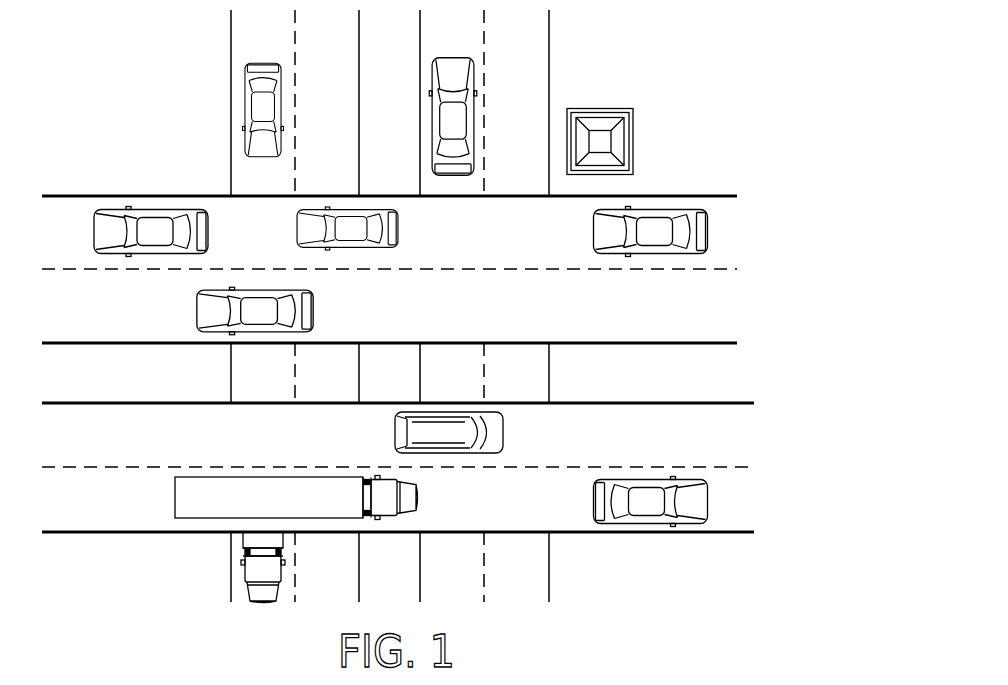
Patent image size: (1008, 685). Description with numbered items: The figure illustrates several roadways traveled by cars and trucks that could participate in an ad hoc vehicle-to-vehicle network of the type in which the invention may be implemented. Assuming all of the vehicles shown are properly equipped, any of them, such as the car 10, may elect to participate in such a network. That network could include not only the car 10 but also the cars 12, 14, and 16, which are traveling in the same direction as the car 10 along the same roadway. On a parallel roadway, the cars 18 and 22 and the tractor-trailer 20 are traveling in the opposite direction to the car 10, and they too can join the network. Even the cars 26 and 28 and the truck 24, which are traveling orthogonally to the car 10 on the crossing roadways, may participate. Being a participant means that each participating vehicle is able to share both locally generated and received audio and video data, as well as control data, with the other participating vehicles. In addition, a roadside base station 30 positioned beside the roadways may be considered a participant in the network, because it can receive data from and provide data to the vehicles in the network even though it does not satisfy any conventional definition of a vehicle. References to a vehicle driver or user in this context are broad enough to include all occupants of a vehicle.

The car 10 is at (197, 328).
The car 12 is at (165, 213).
The car 14 is at (348, 211).
The car 16 is at (652, 212).
The car 18 is at (440, 412).
The tractor-trailer 20 is at (203, 517).
The car 22 is at (676, 520).
The truck 24 is at (244, 565).
The car 26 is at (248, 123).
The car 28 is at (432, 90).
The base station 30 is at (635, 142).